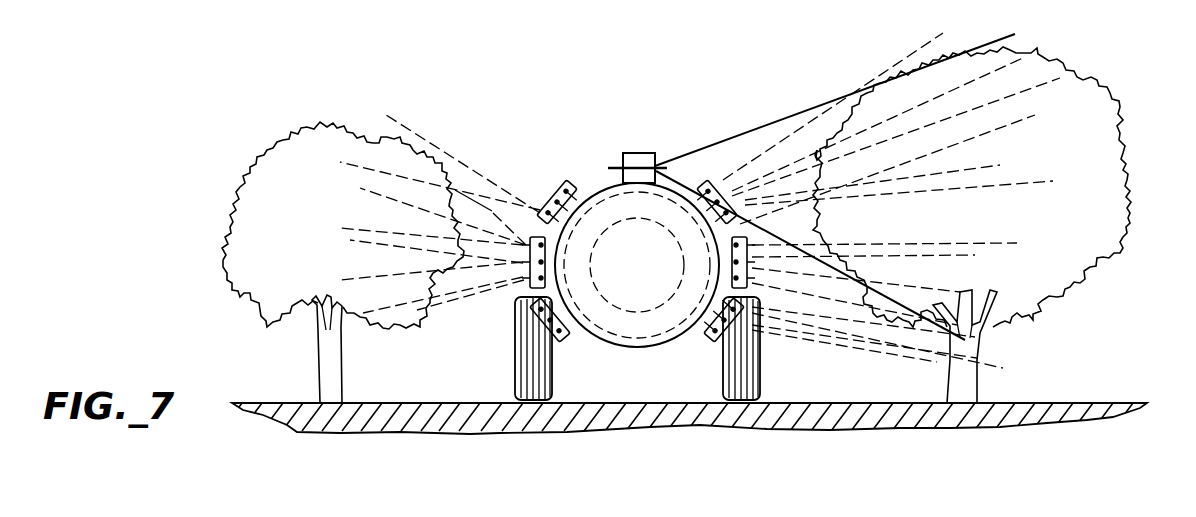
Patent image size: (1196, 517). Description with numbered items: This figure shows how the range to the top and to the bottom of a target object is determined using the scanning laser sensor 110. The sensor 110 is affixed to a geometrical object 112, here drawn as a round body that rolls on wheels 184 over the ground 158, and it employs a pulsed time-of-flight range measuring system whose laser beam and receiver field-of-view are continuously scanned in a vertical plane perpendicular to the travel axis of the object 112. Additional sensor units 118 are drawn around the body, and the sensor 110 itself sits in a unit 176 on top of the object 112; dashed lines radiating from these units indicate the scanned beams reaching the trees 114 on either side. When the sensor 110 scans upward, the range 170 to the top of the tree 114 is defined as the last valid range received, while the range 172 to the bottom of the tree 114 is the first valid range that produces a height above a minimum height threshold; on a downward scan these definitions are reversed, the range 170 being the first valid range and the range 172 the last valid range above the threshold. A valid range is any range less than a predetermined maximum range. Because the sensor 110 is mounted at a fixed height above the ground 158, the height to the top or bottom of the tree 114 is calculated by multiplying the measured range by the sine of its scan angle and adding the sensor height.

The sensor 110 is at (637, 247).
The geometrical object 112 is at (625, 348).
The tree 114 is at (258, 297).
The sensors 118 is at (560, 186).
The ground surface 158 is at (1095, 402).
The range to the top of the tree 170 is at (725, 141).
The range to the bottom of the tree 172 is at (916, 312).
The top-mounted sensor unit 176 is at (641, 148).
The wheels 184 is at (515, 353).